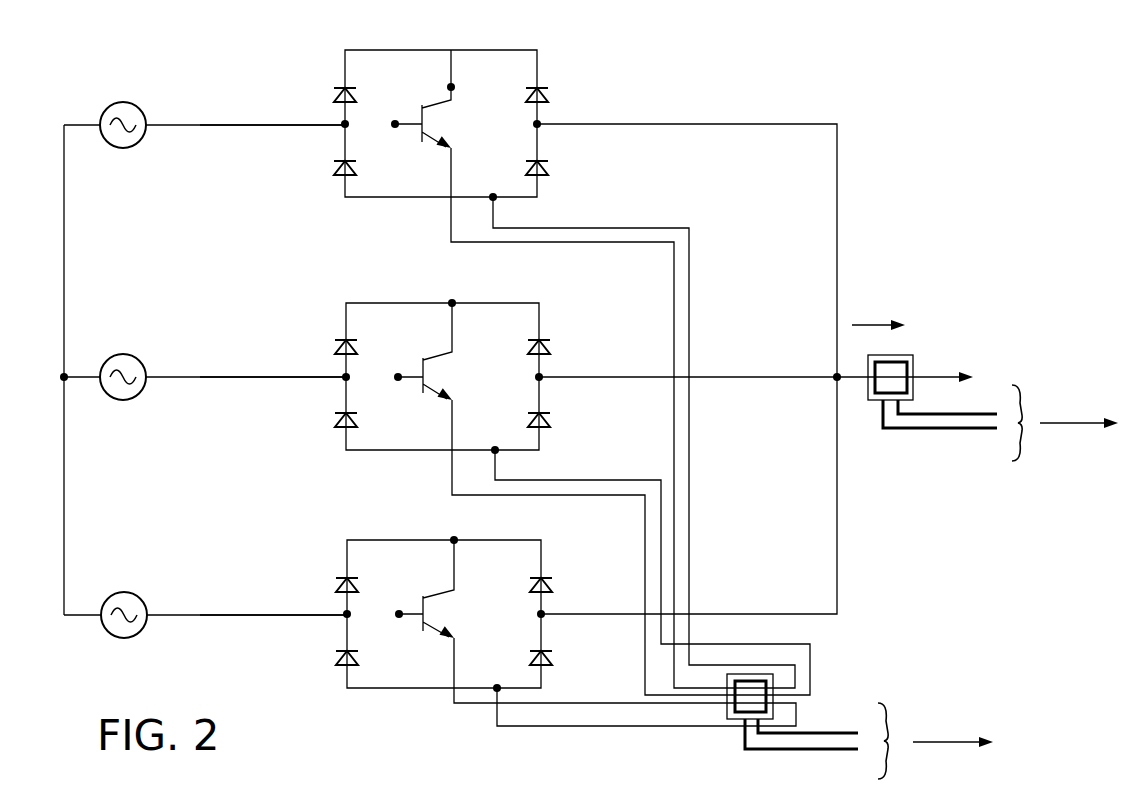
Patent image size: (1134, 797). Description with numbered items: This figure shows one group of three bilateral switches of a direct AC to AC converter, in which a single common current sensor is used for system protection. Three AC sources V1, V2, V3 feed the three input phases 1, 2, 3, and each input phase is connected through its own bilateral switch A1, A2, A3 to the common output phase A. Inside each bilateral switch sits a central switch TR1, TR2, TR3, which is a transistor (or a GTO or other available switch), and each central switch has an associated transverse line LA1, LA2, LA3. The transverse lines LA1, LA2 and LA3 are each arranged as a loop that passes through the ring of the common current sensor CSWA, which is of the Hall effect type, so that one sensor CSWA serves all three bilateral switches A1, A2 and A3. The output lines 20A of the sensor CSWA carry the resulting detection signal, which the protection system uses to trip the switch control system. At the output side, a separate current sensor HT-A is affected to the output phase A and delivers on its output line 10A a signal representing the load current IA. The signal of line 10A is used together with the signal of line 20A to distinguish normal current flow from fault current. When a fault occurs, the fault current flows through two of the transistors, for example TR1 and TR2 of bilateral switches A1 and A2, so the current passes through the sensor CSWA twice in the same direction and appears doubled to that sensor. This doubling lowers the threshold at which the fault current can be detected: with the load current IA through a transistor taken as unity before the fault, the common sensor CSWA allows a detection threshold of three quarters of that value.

The AC voltage source phase 1 V1 is at (204, 113).
The AC voltage source phase 2 V2 is at (205, 368).
The AC voltage source phase 3 V3 is at (205, 606).
The input phase 1 is at (252, 125).
The input phase 2 is at (241, 377).
The input phase 3 is at (242, 615).
The bilateral switch A1 is at (441, 125).
The bilateral switch A2 is at (442, 367).
The bilateral switch A3 is at (444, 603).
The central switch TR1 is at (444, 101).
The central switch TR2 is at (446, 353).
The central switch TR3 is at (442, 591).
The transverse line LA1 is at (599, 242).
The transverse line LA2 is at (575, 495).
The transverse line LA3 is at (567, 703).
The output phase current IA is at (878, 308).
The current sensor HT-A is at (908, 355).
The output phase A is at (943, 377).
The output line 10A is at (1070, 423).
The common current sensor CSWA is at (731, 720).
The output lines 20A is at (922, 742).